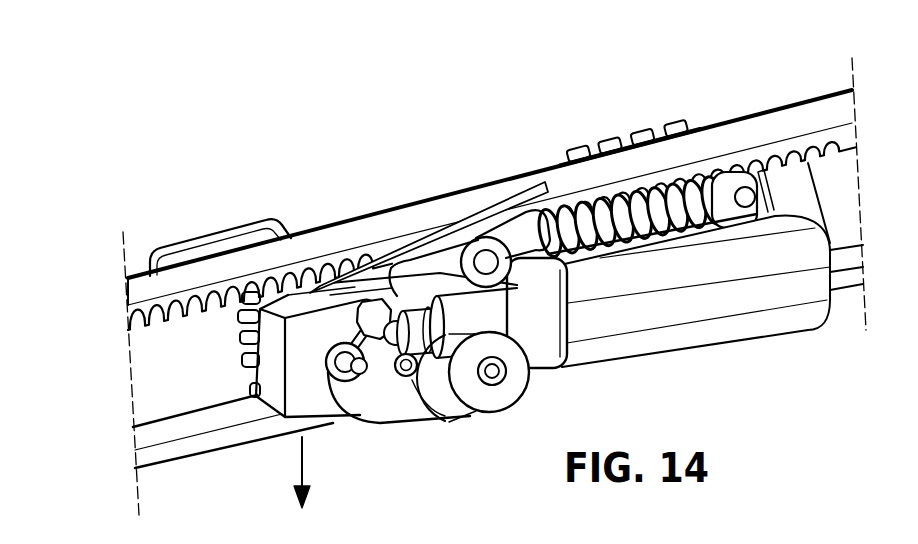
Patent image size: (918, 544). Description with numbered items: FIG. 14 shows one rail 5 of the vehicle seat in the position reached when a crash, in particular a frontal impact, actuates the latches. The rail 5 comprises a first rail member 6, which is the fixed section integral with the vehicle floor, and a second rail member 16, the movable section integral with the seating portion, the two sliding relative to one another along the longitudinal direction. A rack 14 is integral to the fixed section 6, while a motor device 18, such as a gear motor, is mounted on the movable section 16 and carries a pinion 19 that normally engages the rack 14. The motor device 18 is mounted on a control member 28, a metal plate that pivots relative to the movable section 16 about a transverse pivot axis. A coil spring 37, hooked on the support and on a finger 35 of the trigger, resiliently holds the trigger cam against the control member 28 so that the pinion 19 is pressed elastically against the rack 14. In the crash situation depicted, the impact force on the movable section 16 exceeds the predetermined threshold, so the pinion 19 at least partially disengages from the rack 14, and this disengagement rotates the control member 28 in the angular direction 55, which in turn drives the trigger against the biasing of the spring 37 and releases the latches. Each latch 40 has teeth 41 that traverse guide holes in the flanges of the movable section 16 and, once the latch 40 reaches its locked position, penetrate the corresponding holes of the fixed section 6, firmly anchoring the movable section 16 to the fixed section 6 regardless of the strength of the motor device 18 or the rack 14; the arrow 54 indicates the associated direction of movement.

The rail 5 is at (143, 188).
The first rail member 6 is at (120, 287).
The rack 14 is at (182, 315).
The second rail member 16 is at (138, 390).
The motor device 18 is at (414, 449).
The pinion 19 is at (232, 372).
The control member 28 is at (410, 273).
The finger 35 is at (753, 175).
The spring 37 is at (560, 217).
The latch 40 is at (679, 106).
The teeth 41 is at (635, 138).
The direction of movement 54 is at (301, 489).
The angular direction 55 is at (452, 250).